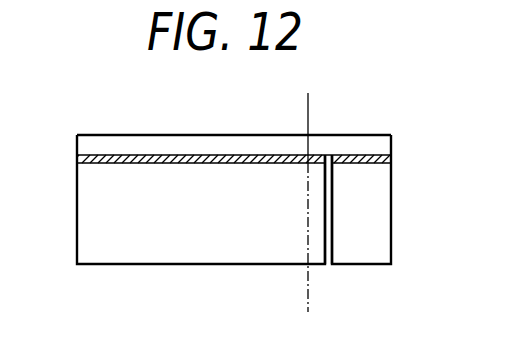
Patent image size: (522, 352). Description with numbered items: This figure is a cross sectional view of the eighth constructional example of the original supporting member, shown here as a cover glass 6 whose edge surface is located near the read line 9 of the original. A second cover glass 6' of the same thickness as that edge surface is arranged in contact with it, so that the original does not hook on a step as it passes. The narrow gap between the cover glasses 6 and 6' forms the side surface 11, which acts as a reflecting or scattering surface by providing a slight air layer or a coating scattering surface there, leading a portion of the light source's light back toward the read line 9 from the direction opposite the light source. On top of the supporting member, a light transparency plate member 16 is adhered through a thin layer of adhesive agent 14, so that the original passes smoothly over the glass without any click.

The cover glass 6 is at (182, 199).
The cover glass 6' is at (388, 199).
The read line 9 is at (307, 135).
The side surface 11 is at (327, 199).
The adhesive agent 14 is at (91, 155).
The light transparency plate member 16 is at (182, 142).